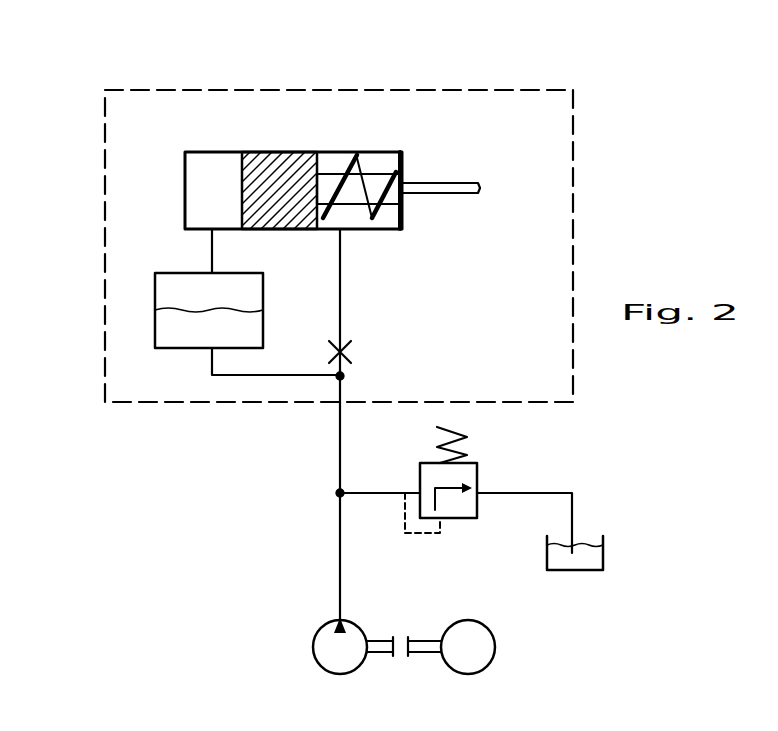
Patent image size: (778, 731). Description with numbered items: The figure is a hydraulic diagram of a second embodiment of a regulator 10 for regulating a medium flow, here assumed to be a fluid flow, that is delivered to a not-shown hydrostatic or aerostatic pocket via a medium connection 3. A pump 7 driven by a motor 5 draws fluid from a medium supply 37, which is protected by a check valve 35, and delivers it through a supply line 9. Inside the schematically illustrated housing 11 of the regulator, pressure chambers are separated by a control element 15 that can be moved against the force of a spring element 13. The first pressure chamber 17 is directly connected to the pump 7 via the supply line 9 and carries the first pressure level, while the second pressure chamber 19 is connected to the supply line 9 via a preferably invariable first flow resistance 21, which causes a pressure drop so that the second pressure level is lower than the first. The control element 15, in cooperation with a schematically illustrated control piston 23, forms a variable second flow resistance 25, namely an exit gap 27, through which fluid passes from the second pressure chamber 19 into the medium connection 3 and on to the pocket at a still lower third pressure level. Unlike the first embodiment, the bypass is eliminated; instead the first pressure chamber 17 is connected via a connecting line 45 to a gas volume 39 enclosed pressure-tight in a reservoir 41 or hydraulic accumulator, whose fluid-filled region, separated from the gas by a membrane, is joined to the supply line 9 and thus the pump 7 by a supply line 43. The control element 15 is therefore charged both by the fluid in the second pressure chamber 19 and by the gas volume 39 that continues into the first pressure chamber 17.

The medium connection 3 is at (450, 183).
The motor 5 is at (490, 662).
The pump 7 is at (318, 665).
The supply line 9 is at (337, 458).
The regulator 10 is at (211, 82).
The housing 11 is at (120, 133).
The spring element 13 is at (336, 165).
The control element 15 is at (270, 177).
The first pressure chamber 17 is at (198, 195).
The second pressure chamber 19 is at (380, 165).
The first flow resistance 21 is at (350, 350).
The control piston 23 is at (330, 175).
The variable second flow resistance 25 is at (406, 176).
The exit gap 27 is at (393, 207).
The check valve 35 is at (482, 463).
The medium supply 37 is at (583, 538).
The gas volume 39 is at (172, 290).
The reservoir 41 is at (142, 335).
The supply line 43 is at (263, 376).
The connecting line 45 is at (212, 253).